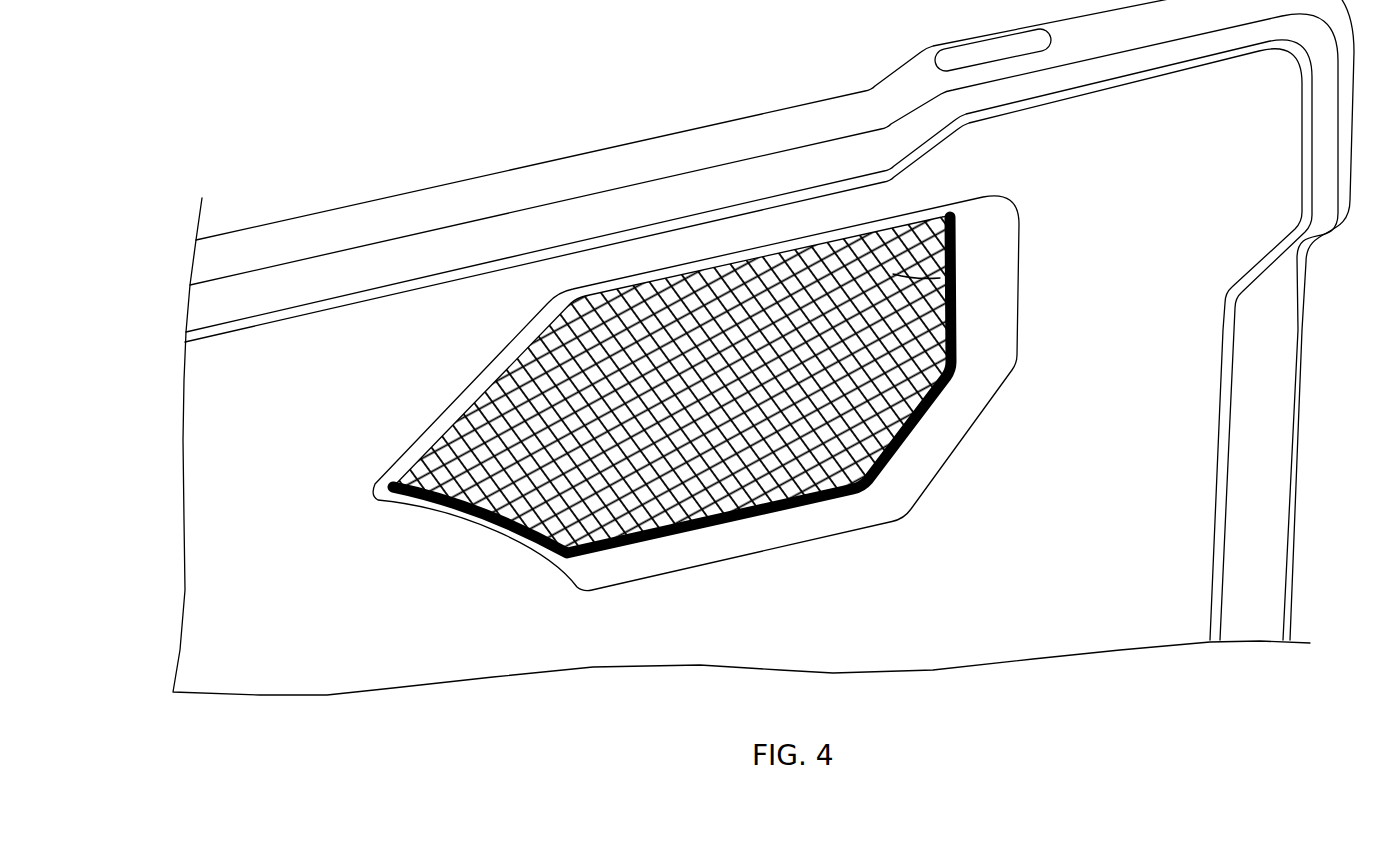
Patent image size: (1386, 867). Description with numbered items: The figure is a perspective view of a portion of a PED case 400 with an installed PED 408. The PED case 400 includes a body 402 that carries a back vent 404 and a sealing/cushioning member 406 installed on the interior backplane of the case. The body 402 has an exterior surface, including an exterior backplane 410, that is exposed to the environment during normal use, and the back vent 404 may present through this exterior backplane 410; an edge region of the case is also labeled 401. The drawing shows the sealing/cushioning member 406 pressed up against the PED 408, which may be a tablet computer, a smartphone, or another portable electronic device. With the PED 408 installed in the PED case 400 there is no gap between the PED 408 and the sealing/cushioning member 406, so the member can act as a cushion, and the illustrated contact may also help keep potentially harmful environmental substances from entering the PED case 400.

The PED case 400 is at (224, 90).
The upper frame edge 401 is at (413, 190).
The body 402 is at (652, 153).
The back vent 404 is at (739, 392).
The sealing/cushioning member 406 is at (958, 342).
The PED 408 is at (958, 264).
The exterior backplane 410 is at (1120, 504).